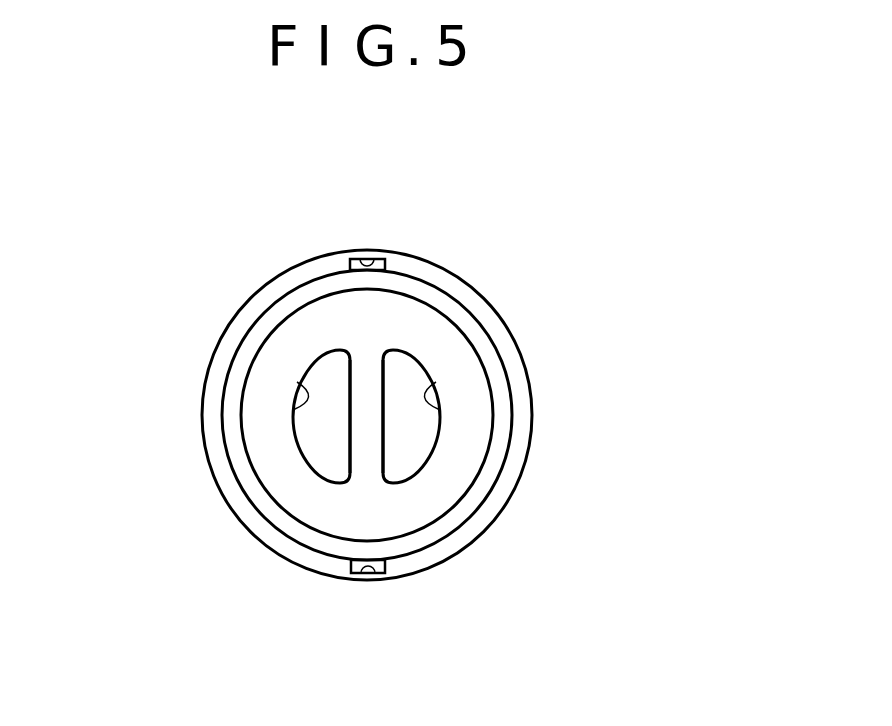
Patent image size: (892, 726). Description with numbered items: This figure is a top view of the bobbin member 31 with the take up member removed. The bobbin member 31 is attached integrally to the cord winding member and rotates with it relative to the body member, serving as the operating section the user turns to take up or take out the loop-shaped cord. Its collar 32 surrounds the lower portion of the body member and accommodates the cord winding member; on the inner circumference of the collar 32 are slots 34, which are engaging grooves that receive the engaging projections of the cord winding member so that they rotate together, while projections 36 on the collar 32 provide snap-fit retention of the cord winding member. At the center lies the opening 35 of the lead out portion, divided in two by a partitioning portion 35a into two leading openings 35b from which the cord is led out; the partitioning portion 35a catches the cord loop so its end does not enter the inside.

The bobbin member 31 is at (410, 220).
The collar 32 is at (480, 520).
The slots 34 is at (364, 259).
The opening 35 is at (338, 328).
The partitioning portion 35a is at (366, 407).
The leading openings 35b is at (293, 410).
The projections 36 is at (263, 333).